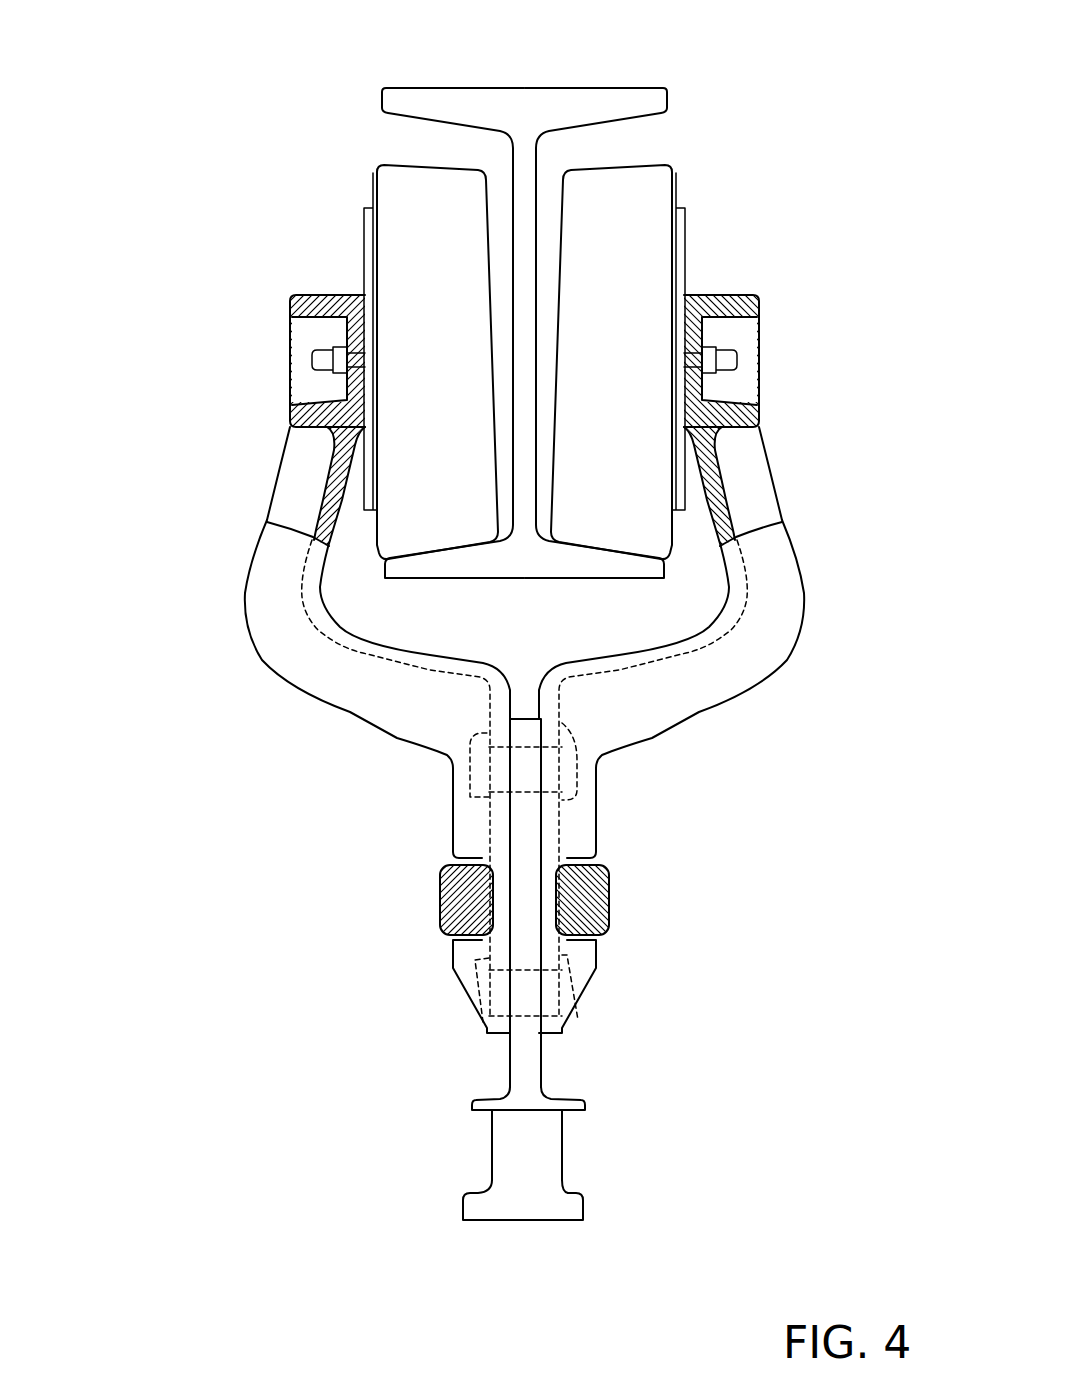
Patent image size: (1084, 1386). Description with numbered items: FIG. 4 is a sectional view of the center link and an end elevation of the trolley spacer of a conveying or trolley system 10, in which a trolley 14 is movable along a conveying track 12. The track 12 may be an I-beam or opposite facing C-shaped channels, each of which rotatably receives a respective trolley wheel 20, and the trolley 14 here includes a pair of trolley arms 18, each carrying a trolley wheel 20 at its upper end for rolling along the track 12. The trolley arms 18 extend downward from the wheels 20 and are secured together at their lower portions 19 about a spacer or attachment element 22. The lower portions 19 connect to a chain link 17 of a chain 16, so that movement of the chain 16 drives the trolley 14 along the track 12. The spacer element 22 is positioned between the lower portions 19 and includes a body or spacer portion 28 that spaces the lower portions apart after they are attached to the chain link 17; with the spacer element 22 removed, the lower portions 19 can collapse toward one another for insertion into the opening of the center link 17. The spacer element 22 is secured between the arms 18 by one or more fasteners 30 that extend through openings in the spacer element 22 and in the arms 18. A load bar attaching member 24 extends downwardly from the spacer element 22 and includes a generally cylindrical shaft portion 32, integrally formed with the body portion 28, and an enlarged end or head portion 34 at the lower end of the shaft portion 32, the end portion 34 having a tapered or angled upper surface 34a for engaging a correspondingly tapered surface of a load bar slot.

The conveying system or trolley system 10 is at (150, 248).
The conveying track 12 is at (524, 58).
The trolley 14 is at (838, 370).
The chain 16 is at (418, 890).
The chain link 17 is at (603, 895).
The trolley arm 18 is at (460, 779).
The lower portion 19 is at (582, 982).
The trolley wheel 20 is at (400, 202).
The spacer or attachment element 22 is at (492, 1064).
The load bar attaching member 24 is at (549, 1187).
The body portion or spacer portion 28 is at (525, 823).
The fastener 30 is at (470, 742).
The shaft portion 32 is at (500, 1143).
The end portion or head portion 34 is at (488, 1210).
The tapered or angled upper surface 34a is at (570, 1183).